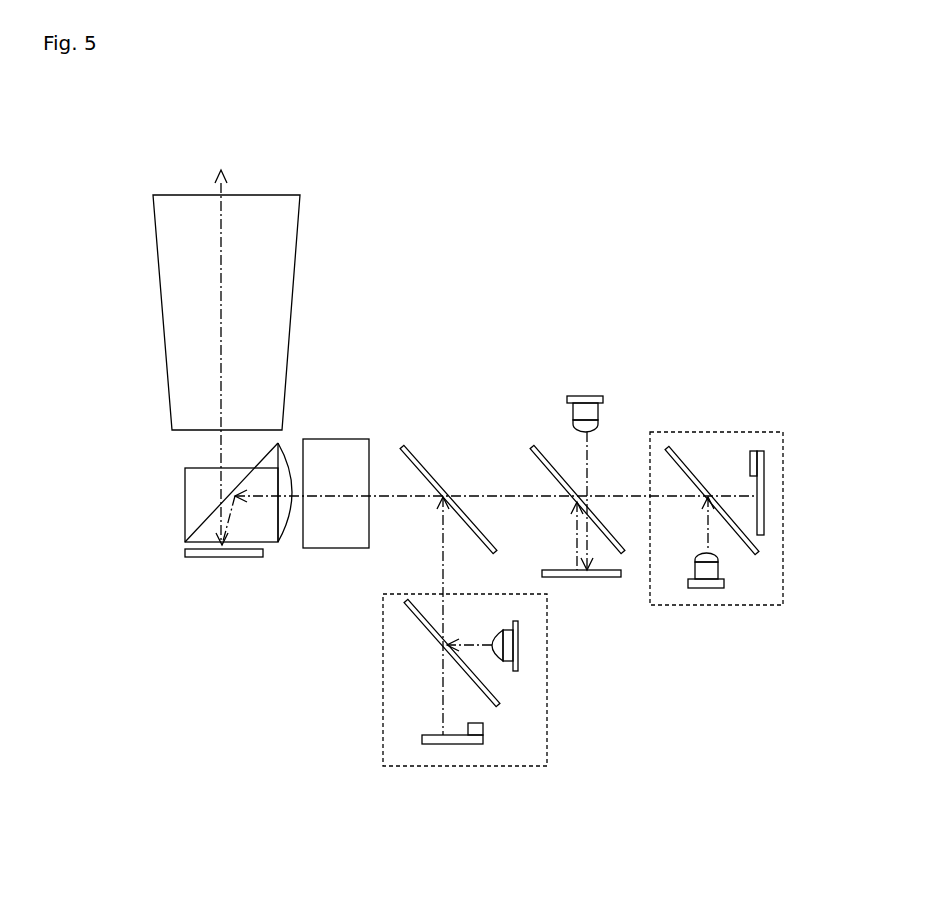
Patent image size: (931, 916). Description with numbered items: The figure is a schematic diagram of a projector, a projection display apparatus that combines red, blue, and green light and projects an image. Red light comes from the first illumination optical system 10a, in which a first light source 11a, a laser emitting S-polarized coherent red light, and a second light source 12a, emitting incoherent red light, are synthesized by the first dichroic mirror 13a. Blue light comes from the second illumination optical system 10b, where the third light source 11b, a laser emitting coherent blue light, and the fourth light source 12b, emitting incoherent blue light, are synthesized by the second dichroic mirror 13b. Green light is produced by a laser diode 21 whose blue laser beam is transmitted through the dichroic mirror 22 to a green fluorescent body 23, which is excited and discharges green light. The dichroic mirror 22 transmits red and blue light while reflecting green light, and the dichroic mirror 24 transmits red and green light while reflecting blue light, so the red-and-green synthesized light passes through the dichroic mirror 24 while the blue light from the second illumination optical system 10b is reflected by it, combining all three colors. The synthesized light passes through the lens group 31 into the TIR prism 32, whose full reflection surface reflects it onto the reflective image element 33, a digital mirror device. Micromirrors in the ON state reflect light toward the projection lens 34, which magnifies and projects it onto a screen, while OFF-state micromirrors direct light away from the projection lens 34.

The projection lens 34 is at (263, 213).
The TIR prism 32 is at (190, 503).
The reflective image element 33 is at (198, 557).
The lens group 31 is at (352, 442).
The dichroic mirror 24 is at (407, 447).
The dichroic mirror 22 is at (538, 447).
The laser diode 21 is at (580, 397).
The green fluorescent body 23 is at (600, 577).
The first illumination optical system 10a is at (670, 605).
The first dichroic mirror 13a is at (683, 449).
The second light source 12a is at (760, 513).
The first light source 11a is at (712, 588).
The second illumination optical system 10b is at (523, 766).
The second dichroic mirror 13b is at (423, 627).
The third light source 11b is at (508, 661).
The fourth light source 12b is at (435, 744).